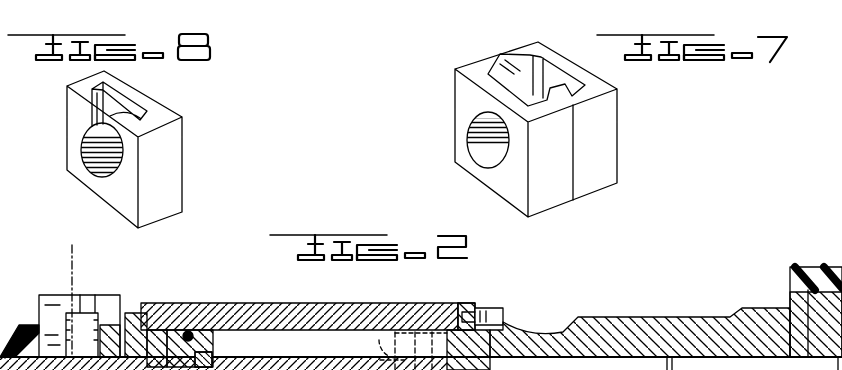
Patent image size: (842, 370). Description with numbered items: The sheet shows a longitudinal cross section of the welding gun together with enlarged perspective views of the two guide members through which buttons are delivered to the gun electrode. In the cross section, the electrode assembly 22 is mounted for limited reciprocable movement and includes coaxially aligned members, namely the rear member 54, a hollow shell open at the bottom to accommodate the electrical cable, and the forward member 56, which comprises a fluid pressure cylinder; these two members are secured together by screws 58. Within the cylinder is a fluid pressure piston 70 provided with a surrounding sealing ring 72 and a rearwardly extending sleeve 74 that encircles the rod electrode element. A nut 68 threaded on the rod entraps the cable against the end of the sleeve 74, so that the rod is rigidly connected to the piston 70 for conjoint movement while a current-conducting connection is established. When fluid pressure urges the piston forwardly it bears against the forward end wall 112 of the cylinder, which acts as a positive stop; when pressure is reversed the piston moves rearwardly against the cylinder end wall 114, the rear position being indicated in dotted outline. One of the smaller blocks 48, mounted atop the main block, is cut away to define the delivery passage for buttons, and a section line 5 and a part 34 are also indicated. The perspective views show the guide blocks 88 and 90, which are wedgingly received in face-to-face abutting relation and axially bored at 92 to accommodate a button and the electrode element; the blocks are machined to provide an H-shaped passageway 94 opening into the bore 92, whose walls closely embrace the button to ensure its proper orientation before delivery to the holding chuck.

In FIG. 2, the section line 5 is at (65, 272).
In FIG. 2, the electrode assembly 22 is at (232, 293).
In FIG. 2, the support member 34 is at (32, 325).
In FIG. 2, the smaller block 48 is at (105, 302).
In FIG. 2, the rear member 54 is at (635, 328).
In FIG. 2, the forward member 56 is at (345, 312).
In FIG. 2, the screws 58 is at (500, 308).
In FIG. 2, the nut 68 is at (553, 368).
In FIG. 2, the fluid pressure piston 70 is at (213, 347).
In FIG. 2, the sealing ring 72 is at (189, 331).
In FIG. 2, the sleeve 74 is at (312, 369).
In FIG. 8, the guide block 88 is at (168, 183).
In FIG. 7, the guide block 88 is at (603, 165).
In FIG. 7, the guide block 90 is at (555, 193).
In FIG. 8, the bore 92 is at (107, 175).
In FIG. 7, the bore 92 is at (483, 157).
In FIG. 8, the passageway 94 is at (118, 105).
In FIG. 7, the passageway 94 is at (548, 68).
In FIG. 2, the passageway 94 is at (97, 352).
In FIG. 2, the forward end wall 112 is at (148, 337).
In FIG. 2, the cylinder end wall 114 is at (458, 332).